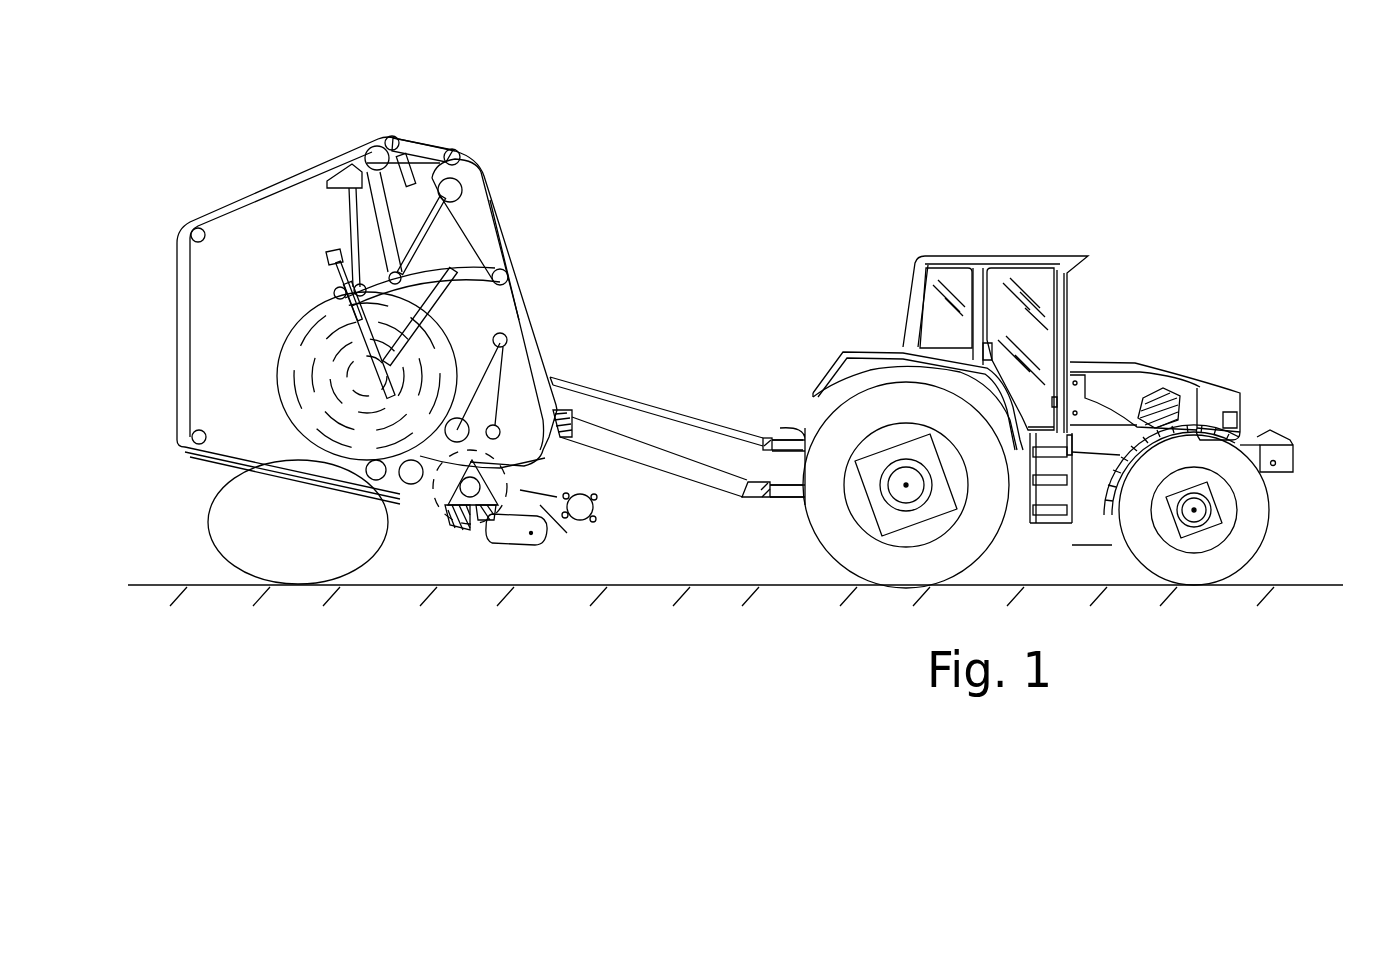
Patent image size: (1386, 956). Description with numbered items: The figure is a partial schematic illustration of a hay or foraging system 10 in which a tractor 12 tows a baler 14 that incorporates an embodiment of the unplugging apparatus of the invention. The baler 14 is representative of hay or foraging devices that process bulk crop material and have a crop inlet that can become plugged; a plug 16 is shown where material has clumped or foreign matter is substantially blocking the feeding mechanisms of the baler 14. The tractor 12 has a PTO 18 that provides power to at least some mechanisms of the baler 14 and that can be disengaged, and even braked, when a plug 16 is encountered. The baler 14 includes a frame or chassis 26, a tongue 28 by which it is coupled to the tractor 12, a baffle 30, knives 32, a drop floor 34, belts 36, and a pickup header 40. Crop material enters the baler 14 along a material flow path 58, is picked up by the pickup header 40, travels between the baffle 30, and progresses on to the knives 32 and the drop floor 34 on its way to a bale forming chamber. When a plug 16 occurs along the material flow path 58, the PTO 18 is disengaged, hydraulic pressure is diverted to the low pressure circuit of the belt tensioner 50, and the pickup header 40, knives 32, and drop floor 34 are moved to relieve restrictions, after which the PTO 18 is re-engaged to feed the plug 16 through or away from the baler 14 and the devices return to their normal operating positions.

The hay or foraging system 10 is at (396, 96).
The tractor 12 is at (868, 228).
The baler 14 is at (630, 164).
The plug 16 is at (487, 517).
The PTO 18 is at (793, 437).
The frame or chassis 26 is at (200, 460).
The tongue 28 is at (640, 463).
The baffle 30 is at (588, 533).
The knives 32 is at (453, 543).
The drop floor 34 is at (433, 508).
The belts 36 is at (177, 342).
The pickup header 40 is at (565, 550).
The belt tensioner 50 is at (468, 322).
The material flow path 58 is at (628, 552).